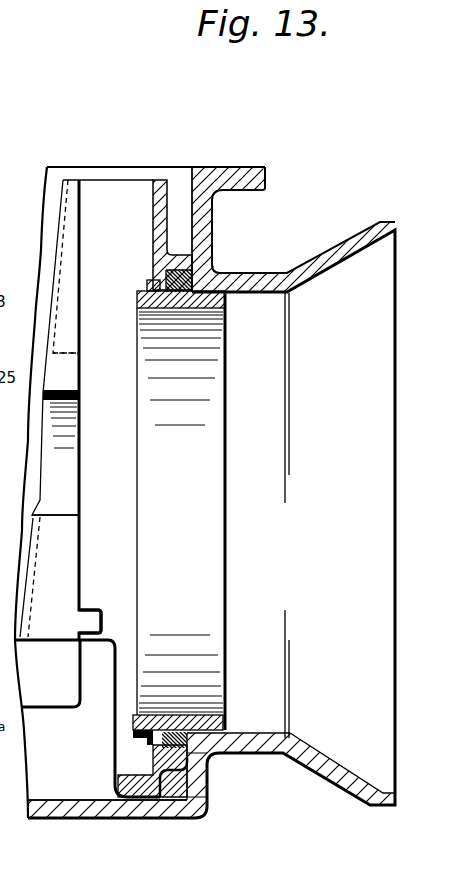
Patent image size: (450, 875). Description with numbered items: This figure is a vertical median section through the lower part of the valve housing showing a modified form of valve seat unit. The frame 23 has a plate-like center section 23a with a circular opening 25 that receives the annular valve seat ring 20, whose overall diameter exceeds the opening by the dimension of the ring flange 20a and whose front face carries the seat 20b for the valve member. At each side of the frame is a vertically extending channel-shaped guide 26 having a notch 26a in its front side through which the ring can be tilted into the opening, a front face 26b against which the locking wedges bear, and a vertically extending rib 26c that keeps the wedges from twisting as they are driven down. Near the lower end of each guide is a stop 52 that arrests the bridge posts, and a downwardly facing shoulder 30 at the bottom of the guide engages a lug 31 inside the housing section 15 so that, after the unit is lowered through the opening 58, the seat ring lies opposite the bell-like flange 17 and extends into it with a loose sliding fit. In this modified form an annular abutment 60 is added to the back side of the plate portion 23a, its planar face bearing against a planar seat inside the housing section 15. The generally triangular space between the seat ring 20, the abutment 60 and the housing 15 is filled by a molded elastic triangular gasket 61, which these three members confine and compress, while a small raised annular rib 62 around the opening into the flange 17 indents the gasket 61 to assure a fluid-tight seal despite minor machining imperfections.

The housing section 15 is at (132, 818).
The bell-like flange 17 is at (334, 778).
The valve seat ring 20 is at (210, 713).
The ring flange 20a is at (148, 760).
The seat 20b is at (140, 733).
The frame 23 is at (151, 238).
The plate-like center section 23a is at (153, 211).
The circular opening 25 is at (153, 713).
The guide 26 is at (104, 183).
The notch 26a is at (60, 514).
The front face 26b is at (79, 353).
The rib 26c is at (45, 323).
The shoulder 30 is at (49, 637).
The lug 31 is at (63, 642).
The stop 52 is at (92, 615).
The opening 58 is at (197, 178).
The annular abutment 60 is at (178, 772).
The triangular gasket 61 is at (160, 308).
The raised annular rib 62 is at (194, 285).